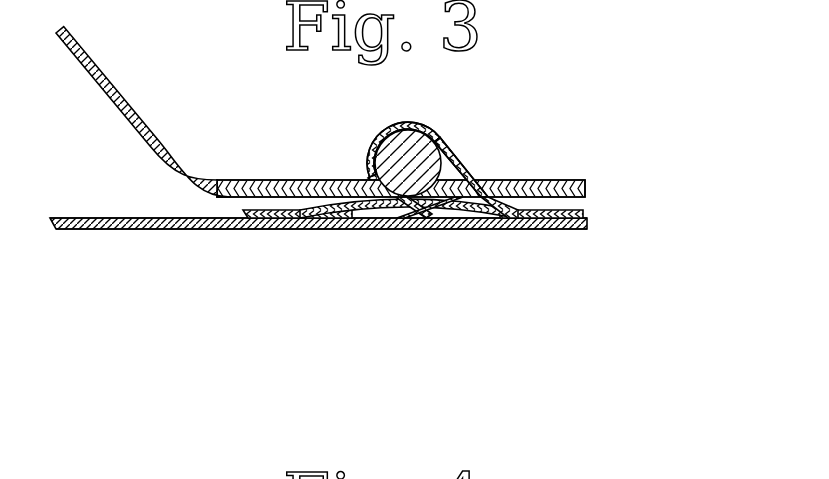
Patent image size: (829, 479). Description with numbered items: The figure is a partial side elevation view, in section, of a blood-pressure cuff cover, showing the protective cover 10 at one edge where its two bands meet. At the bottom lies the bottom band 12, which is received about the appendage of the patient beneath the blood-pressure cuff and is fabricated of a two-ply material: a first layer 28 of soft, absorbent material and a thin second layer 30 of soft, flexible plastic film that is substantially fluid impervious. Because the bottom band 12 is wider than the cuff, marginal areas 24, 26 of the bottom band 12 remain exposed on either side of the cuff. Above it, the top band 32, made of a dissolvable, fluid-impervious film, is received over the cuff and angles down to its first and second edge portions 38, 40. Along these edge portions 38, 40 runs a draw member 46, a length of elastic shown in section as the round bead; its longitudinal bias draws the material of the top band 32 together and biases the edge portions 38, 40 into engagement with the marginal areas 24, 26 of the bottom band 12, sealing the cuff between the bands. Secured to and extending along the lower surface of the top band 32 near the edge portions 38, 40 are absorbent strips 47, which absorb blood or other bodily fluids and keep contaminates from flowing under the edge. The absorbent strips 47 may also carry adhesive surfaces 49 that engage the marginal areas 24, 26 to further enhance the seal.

The protective cover 10 is at (390, 174).
The bottom band 12 is at (150, 232).
The marginal area 24 is at (487, 192).
The marginal area 26 is at (468, 143).
The first layer 28 is at (93, 231).
The second layer 30 is at (100, 217).
The top band 32 is at (82, 52).
The first edge portion 38 is at (573, 180).
The second edge portion 40 is at (475, 172).
The draw member 46 is at (393, 160).
The absorbent strip 47 is at (262, 210).
The adhesive surface 49 is at (340, 207).